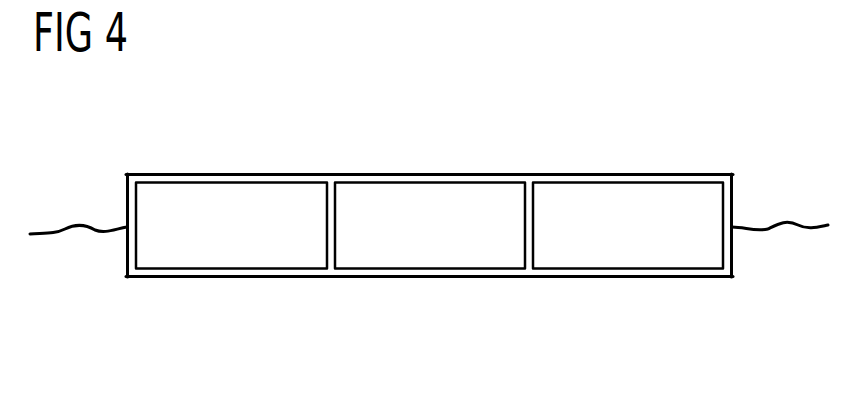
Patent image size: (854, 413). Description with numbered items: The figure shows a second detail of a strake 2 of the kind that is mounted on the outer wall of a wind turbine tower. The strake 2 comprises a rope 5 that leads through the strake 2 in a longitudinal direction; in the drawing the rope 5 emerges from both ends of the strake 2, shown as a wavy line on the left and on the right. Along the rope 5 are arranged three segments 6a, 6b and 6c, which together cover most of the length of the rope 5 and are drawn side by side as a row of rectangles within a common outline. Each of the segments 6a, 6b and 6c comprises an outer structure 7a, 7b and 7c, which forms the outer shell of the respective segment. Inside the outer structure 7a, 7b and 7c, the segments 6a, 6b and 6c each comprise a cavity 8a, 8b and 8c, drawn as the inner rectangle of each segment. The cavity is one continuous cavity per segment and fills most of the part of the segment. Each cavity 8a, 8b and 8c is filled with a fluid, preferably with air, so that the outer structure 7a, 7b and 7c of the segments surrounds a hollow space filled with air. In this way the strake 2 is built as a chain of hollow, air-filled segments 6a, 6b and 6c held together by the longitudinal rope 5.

The strake 2 is at (310, 293).
The rope 5 is at (53, 231).
The segment 6a is at (183, 177).
The segment 6b is at (383, 177).
The segment 6c is at (582, 177).
The outer structure 7a is at (222, 278).
The outer structure 7b is at (420, 278).
The outer structure 7c is at (620, 278).
The cavity 8a is at (278, 195).
The cavity 8b is at (476, 195).
The cavity 8c is at (676, 195).